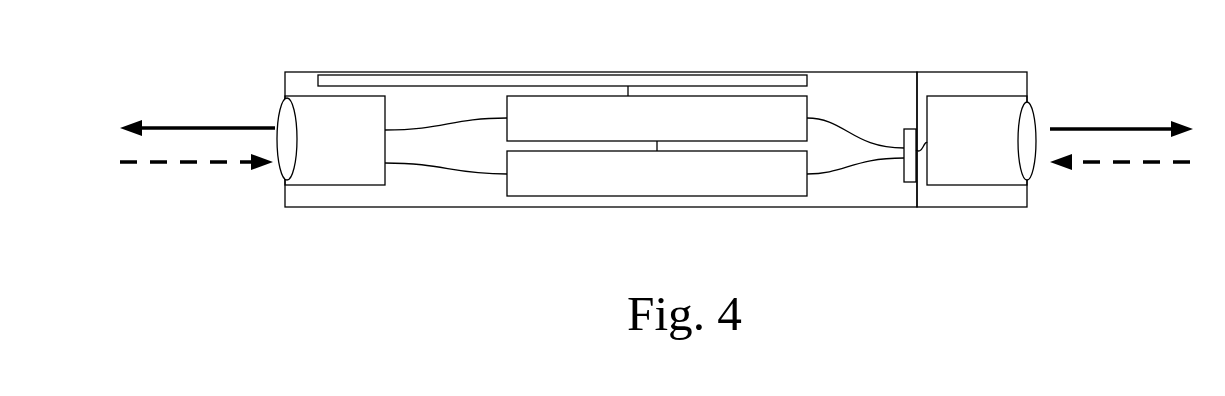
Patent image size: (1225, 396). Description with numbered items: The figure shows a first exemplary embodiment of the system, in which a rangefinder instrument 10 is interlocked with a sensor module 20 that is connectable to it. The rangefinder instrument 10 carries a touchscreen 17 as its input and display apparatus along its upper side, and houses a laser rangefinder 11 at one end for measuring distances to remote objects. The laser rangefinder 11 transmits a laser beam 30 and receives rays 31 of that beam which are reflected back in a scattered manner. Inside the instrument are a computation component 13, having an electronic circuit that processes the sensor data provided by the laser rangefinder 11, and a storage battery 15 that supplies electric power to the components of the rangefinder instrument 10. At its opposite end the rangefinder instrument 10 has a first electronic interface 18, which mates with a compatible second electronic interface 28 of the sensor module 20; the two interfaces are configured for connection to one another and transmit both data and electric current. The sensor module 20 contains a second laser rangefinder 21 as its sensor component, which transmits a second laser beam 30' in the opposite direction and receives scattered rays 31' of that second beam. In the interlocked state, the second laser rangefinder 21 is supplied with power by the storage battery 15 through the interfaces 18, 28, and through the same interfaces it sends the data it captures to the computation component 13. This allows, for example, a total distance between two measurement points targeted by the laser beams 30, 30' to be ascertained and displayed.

The rangefinder instrument 10 is at (601, 104).
The sensor module 20 is at (950, 104).
The touchscreen 17 is at (562, 58).
The laser rangefinder 11 is at (322, 155).
The computation component 13 is at (644, 132).
The storage battery 15 is at (644, 187).
The first electronic interface 18 is at (861, 187).
The second electronic interface 28 is at (861, 187).
The second laser rangefinder 21 is at (962, 155).
The laser beam 30 is at (191, 102).
The rays of the laser beam 31 is at (190, 191).
The second laser beam 30' is at (1113, 103).
The rays of the second laser beam 31' is at (1113, 191).